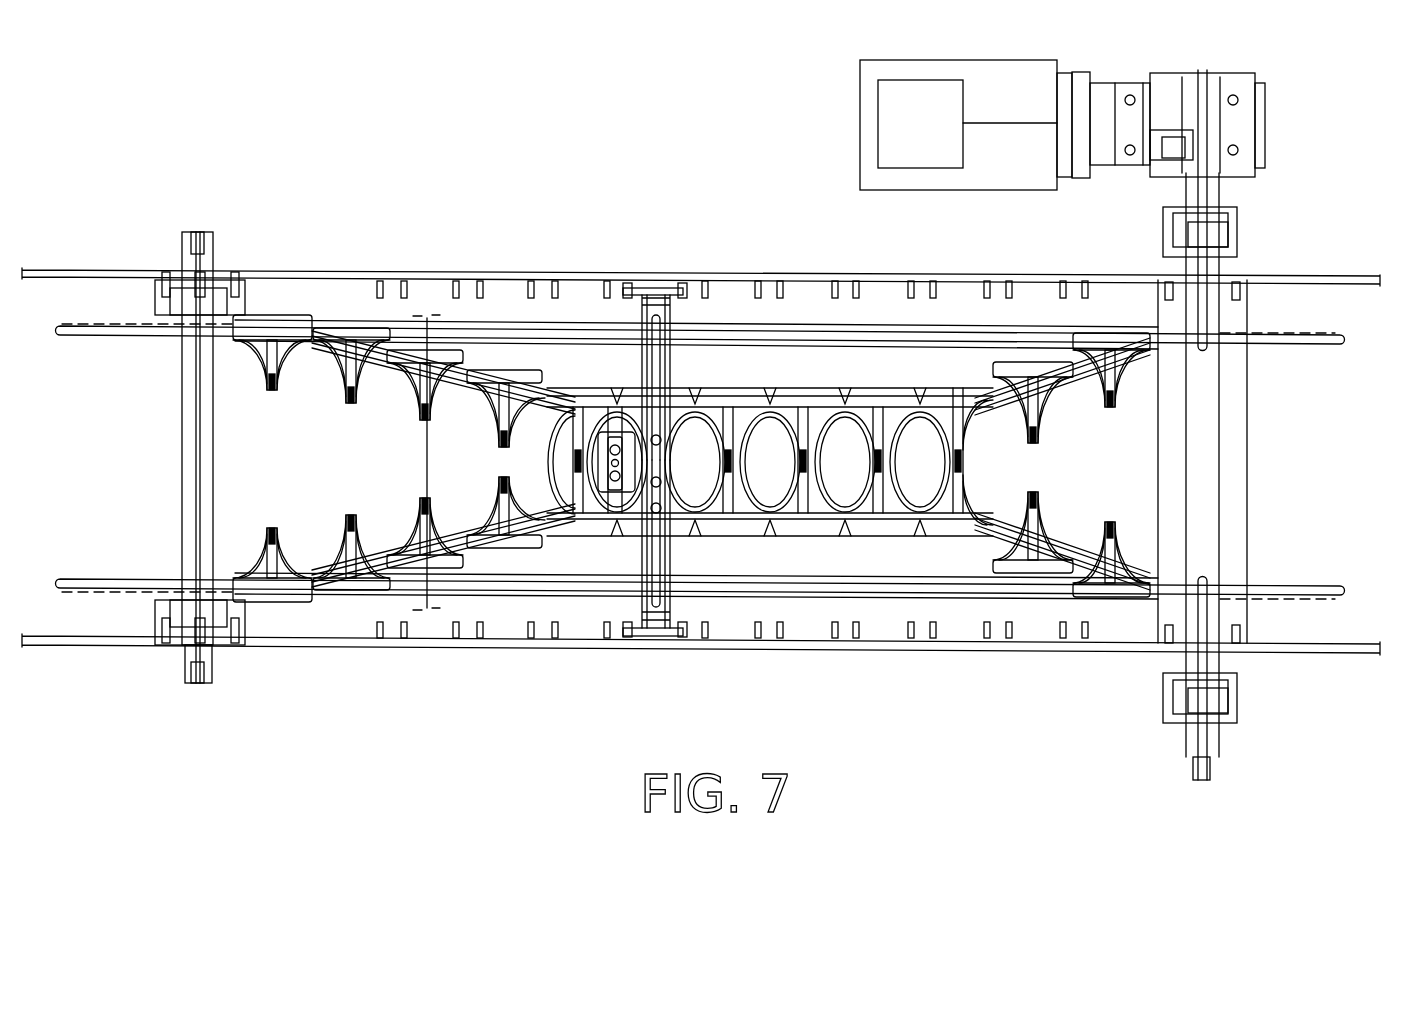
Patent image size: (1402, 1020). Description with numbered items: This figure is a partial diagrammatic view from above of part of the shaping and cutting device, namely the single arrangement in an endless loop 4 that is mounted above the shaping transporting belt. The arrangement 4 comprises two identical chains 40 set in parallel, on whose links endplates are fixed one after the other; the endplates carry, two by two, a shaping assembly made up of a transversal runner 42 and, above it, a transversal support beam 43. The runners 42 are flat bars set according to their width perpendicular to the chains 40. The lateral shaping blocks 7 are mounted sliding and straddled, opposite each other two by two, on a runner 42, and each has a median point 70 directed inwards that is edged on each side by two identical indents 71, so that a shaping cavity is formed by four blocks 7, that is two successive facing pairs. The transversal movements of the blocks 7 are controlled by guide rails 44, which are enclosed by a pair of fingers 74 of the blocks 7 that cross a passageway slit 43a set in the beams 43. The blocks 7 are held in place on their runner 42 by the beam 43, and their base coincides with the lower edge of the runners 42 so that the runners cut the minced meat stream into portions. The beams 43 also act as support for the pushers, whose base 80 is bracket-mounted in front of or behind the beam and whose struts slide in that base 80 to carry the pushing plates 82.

The arrangement in an endless loop 4 is at (213, 178).
The lateral shaping block 7 is at (343, 552).
The chain 40 is at (348, 270).
The transversal runner 42 is at (423, 472).
The transversal support beam 43 is at (643, 378).
The passageway slit 43a is at (645, 572).
The guide rail 44 is at (887, 403).
The median point 70 is at (1110, 408).
The indent 71 is at (1120, 550).
The finger 74 is at (657, 512).
The base 80 is at (602, 463).
The pushing plate 82 is at (595, 480).